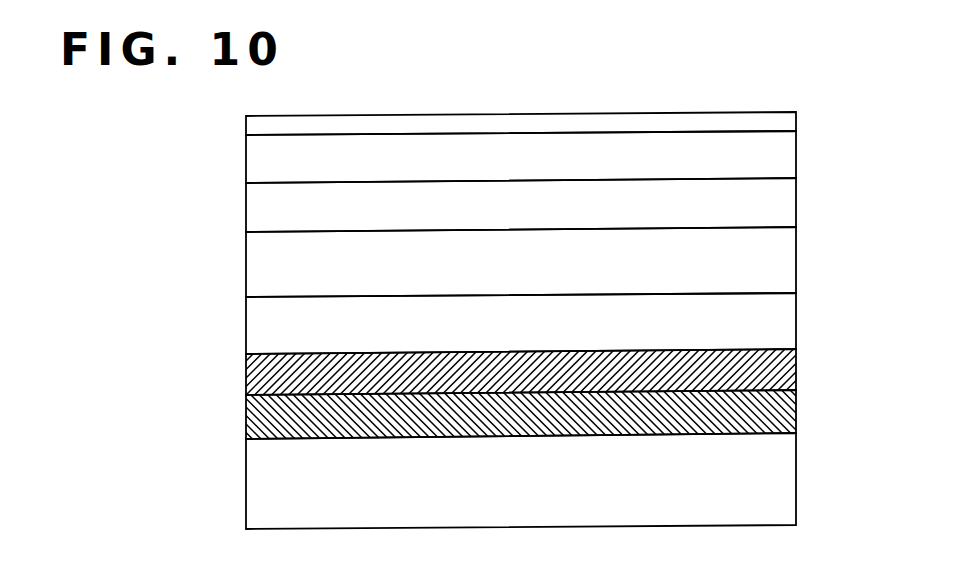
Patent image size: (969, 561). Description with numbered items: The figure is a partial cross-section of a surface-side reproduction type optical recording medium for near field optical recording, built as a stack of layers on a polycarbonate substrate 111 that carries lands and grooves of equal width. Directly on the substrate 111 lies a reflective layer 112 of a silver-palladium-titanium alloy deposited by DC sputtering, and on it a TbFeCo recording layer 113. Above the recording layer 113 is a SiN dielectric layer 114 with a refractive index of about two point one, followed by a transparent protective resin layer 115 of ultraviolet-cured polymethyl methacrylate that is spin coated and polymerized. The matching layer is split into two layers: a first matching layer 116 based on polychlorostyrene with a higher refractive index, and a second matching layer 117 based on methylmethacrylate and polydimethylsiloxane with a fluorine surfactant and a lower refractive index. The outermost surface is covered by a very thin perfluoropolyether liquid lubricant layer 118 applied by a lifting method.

The substrate 111 is at (796, 468).
The reflective layer 112 is at (796, 411).
The recording layer 113 is at (796, 369).
The dielectric layer 114 is at (796, 318).
The transparent protective resin layer 115 is at (796, 252).
The first matching layer 116 is at (796, 202).
The second matching layer 117 is at (796, 163).
The liquid lubricant layer 118 is at (796, 122).